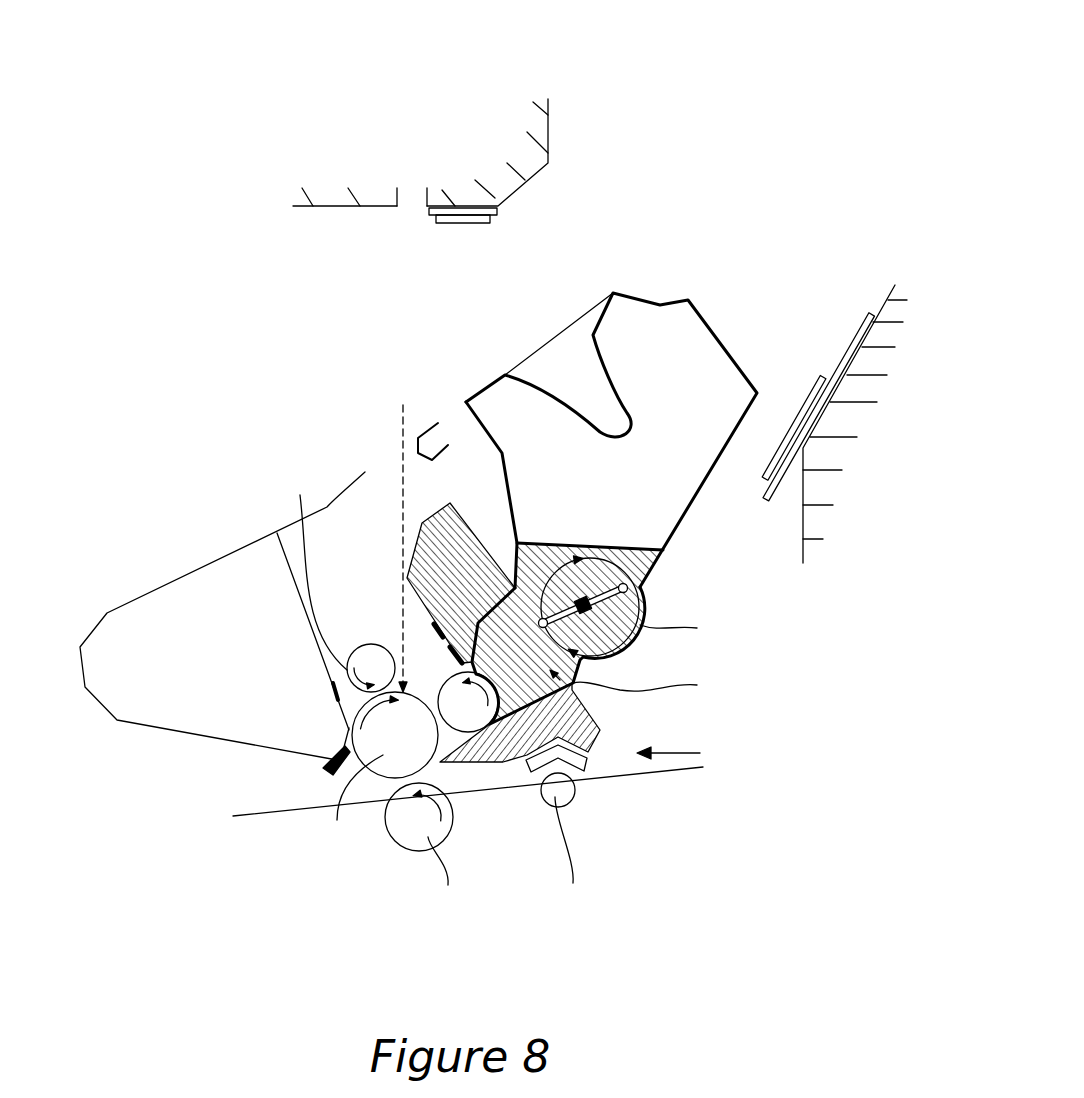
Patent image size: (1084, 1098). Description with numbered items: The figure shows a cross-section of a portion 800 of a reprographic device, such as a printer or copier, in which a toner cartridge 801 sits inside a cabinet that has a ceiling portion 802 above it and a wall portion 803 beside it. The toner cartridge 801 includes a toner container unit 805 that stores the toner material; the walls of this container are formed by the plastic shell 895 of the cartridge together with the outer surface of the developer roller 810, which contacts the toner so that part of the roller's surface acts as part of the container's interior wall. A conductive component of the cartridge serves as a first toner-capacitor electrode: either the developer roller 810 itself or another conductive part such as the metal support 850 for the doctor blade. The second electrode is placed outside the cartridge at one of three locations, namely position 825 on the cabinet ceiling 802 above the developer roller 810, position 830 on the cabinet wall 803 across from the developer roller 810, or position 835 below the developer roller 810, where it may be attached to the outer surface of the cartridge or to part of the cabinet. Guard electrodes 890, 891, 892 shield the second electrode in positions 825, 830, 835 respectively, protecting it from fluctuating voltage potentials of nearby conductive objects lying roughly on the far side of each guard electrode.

The portion of a reprographic device 800 is at (678, 50).
The toner cartridge 801 is at (626, 539).
The ceiling portion 802 is at (548, 133).
The wall portion 803 is at (829, 403).
The toner container unit 805 is at (670, 550).
The developer roller 810 is at (465, 710).
The second electrode position 825 is at (490, 219).
The second electrode position 830 is at (820, 387).
The second electrode position 835 is at (597, 767).
The metal support for the doctor blade 850 is at (437, 622).
The guard electrode 890 is at (497, 211).
The guard electrode 891 is at (853, 323).
The guard electrode 892 is at (577, 773).
The plastic shell 895 is at (537, 342).